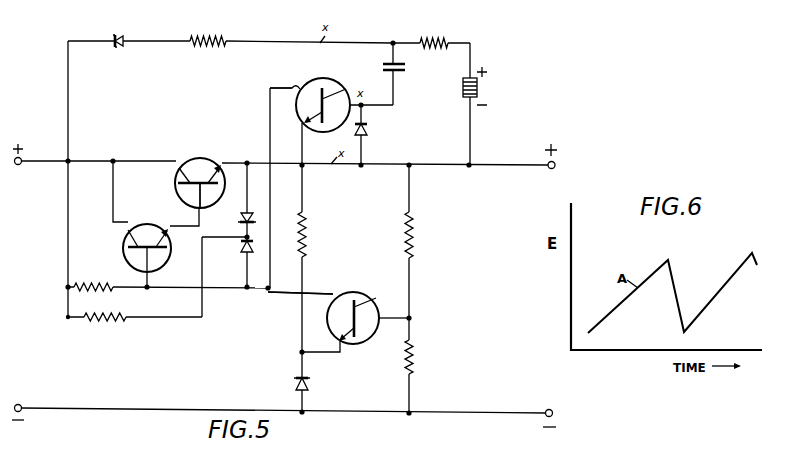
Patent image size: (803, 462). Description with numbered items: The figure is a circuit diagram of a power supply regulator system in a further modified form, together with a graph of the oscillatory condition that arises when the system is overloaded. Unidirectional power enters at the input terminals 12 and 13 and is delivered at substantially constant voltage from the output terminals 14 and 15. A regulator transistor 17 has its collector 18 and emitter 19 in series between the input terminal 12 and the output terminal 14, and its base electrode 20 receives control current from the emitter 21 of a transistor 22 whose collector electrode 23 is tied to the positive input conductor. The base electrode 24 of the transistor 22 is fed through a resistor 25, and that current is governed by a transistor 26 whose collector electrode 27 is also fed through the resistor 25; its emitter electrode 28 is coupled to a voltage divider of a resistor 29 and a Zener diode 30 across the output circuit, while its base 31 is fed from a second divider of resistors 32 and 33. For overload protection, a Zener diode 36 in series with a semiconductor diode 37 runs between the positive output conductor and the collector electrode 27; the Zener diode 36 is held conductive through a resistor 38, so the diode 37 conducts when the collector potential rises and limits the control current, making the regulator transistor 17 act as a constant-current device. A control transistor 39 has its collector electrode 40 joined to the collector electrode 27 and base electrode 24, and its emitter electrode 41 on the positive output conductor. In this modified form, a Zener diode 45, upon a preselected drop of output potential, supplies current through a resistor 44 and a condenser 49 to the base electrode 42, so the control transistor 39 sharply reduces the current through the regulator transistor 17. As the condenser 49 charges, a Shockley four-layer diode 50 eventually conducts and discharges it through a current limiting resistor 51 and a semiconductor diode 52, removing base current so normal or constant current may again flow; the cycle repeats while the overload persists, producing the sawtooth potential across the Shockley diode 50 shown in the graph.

The input terminal 12 is at (18, 166).
The input terminal 13 is at (18, 404).
The output terminal 14 is at (552, 167).
The output terminal 15 is at (550, 409).
The regulator transistor 17 is at (195, 167).
The collector 18 is at (178, 178).
The emitter 19 is at (213, 162).
The base electrode 20 is at (191, 190).
The emitter 21 is at (171, 243).
The transistor 22 is at (142, 255).
The collector electrode 23 is at (128, 240).
The base electrode 24 is at (155, 256).
The resistor 25 is at (94, 284).
The transistor 26 is at (335, 311).
The collector electrode 27 is at (328, 313).
The emitter electrode 28 is at (360, 341).
The resistor 29 is at (309, 231).
The Zener diode 30 is at (310, 384).
The base 31 is at (369, 307).
The resistor 32 is at (416, 231).
The resistor 33 is at (416, 351).
The Zener diode 36 is at (255, 221).
The semiconductor diode 37 is at (241, 251).
The resistor 38 is at (105, 326).
The control transistor 39 is at (317, 95).
The collector electrode 40 is at (298, 88).
The emitter electrode 41 is at (301, 116).
The base electrode 42 is at (342, 91).
The resistor 44 is at (207, 36).
The Zener diode 45 is at (119, 47).
The condenser 49 is at (406, 69).
The Shockley 4-layer semiconductive diode 50 is at (479, 87).
The current limiting protective resistor 51 is at (440, 38).
The semiconductor diode 52 is at (370, 131).